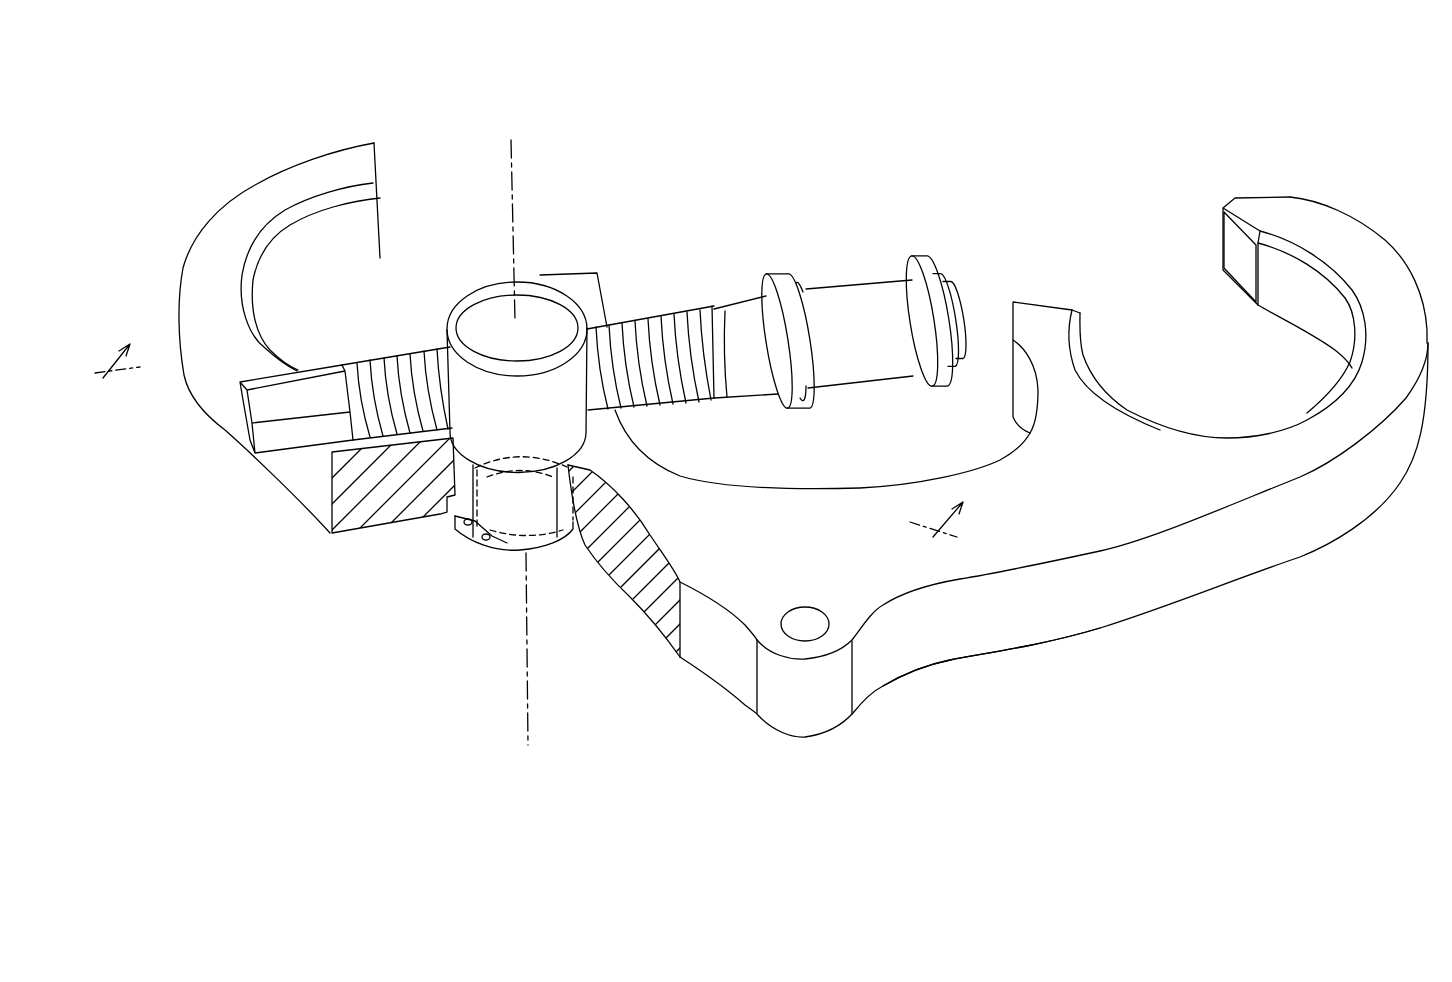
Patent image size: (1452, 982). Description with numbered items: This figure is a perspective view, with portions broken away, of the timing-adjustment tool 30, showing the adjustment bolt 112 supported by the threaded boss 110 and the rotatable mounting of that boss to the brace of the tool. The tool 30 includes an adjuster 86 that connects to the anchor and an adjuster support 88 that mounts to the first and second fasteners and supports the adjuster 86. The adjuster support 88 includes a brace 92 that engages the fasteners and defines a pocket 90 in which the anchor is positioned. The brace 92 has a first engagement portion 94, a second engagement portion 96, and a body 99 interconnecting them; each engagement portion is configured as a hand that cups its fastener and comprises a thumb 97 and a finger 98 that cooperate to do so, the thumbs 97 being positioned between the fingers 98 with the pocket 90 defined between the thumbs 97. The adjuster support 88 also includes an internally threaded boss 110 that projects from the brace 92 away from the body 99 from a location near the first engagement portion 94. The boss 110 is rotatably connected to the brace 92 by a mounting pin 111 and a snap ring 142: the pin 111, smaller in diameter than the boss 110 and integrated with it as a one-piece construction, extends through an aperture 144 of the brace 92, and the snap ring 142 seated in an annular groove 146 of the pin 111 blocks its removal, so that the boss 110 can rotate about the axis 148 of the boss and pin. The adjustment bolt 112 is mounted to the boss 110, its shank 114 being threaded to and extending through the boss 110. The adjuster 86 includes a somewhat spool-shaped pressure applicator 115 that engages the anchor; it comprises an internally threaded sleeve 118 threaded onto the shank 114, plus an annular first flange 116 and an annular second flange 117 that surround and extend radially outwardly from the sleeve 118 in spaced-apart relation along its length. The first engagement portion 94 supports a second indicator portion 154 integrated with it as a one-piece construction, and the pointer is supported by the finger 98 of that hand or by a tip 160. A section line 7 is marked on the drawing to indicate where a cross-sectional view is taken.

The tool 30 is at (388, 85).
The adjuster 86 is at (763, 217).
The adjuster support 88 is at (1113, 655).
The pocket 90 is at (975, 474).
The brace 92 is at (990, 610).
The first engagement portion 94 is at (1354, 481).
The second engagement portion 96 is at (229, 424).
The thumb 97 is at (593, 300).
The finger 98 is at (261, 193).
The body 99 is at (957, 630).
The internally threaded boss 110 is at (493, 318).
The mounting pin 111 is at (537, 490).
The adjustment bolt 112 is at (357, 353).
The shank 114 is at (670, 400).
The pressure applicator 115 is at (830, 282).
The annular first flange 116 is at (924, 260).
The annular second flange 117 is at (780, 284).
The internally threaded sleeve 118 is at (867, 312).
The snap ring 142 is at (540, 550).
The aperture 144 is at (482, 480).
The annular groove 146 is at (465, 535).
The axis 148 is at (513, 150).
The second indicator portion 154 is at (1237, 252).
The tip 160 is at (1283, 208).
The section line 7- 7 is at (525, 448).